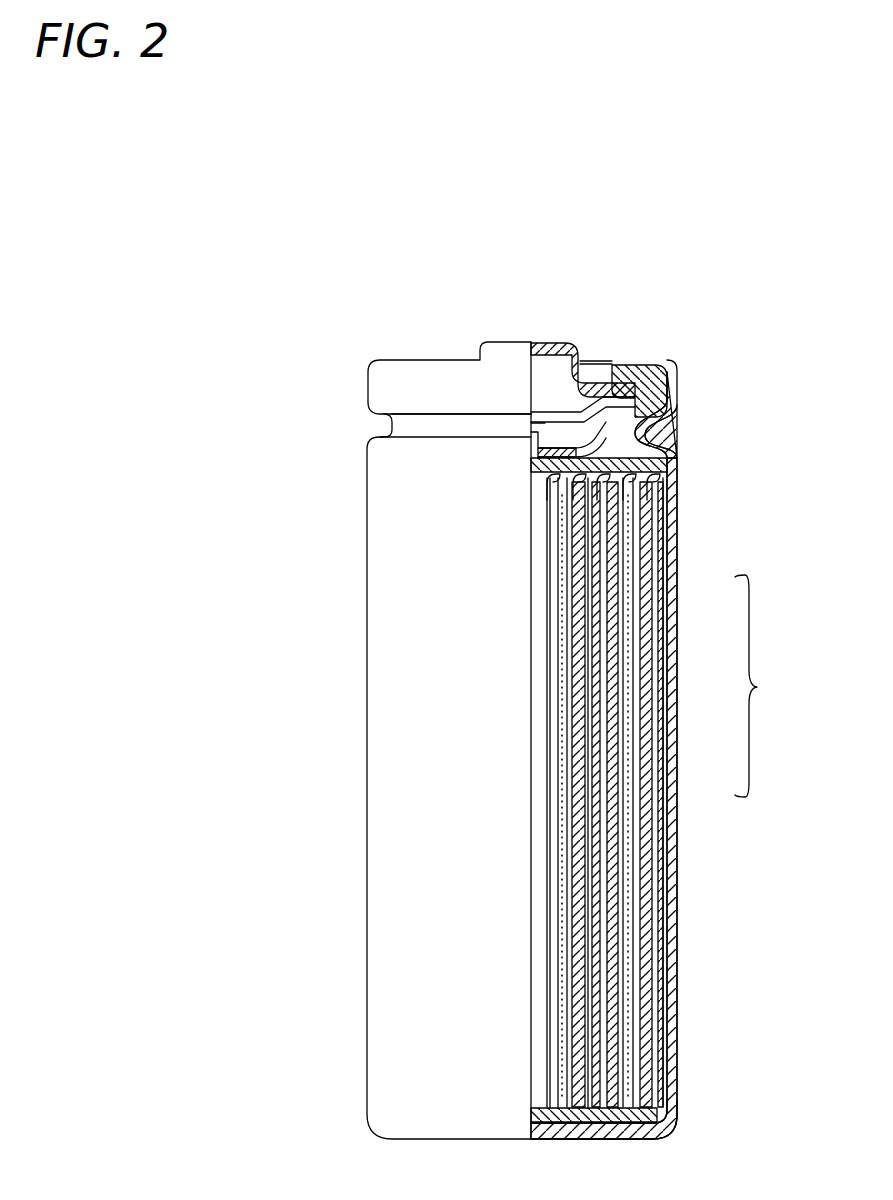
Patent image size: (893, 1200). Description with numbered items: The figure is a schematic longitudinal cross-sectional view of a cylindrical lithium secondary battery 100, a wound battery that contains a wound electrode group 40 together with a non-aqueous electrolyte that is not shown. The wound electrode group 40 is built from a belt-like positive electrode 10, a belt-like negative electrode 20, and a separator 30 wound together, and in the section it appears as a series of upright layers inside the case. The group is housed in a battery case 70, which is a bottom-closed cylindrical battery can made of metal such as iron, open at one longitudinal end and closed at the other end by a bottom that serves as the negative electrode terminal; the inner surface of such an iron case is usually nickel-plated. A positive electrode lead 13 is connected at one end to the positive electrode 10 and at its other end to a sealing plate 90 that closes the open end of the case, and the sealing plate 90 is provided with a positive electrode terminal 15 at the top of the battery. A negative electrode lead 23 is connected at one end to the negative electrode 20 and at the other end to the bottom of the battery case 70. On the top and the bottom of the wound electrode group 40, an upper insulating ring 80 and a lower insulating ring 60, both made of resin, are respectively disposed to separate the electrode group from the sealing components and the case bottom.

The lithium secondary battery 100 is at (493, 258).
The positive electrode terminal 15 is at (562, 343).
The sealing plate 90 is at (648, 365).
The positive electrode lead 13 is at (542, 445).
The upper insulating ring 80 is at (643, 462).
The battery case 70 is at (670, 885).
The lower insulating ring 60 is at (583, 1112).
The negative electrode lead 23 is at (628, 1122).
The wound electrode group 40 is at (668, 790).
The negative electrode 20 is at (645, 600).
The separator 30 is at (625, 692).
The positive electrode 10 is at (635, 787).